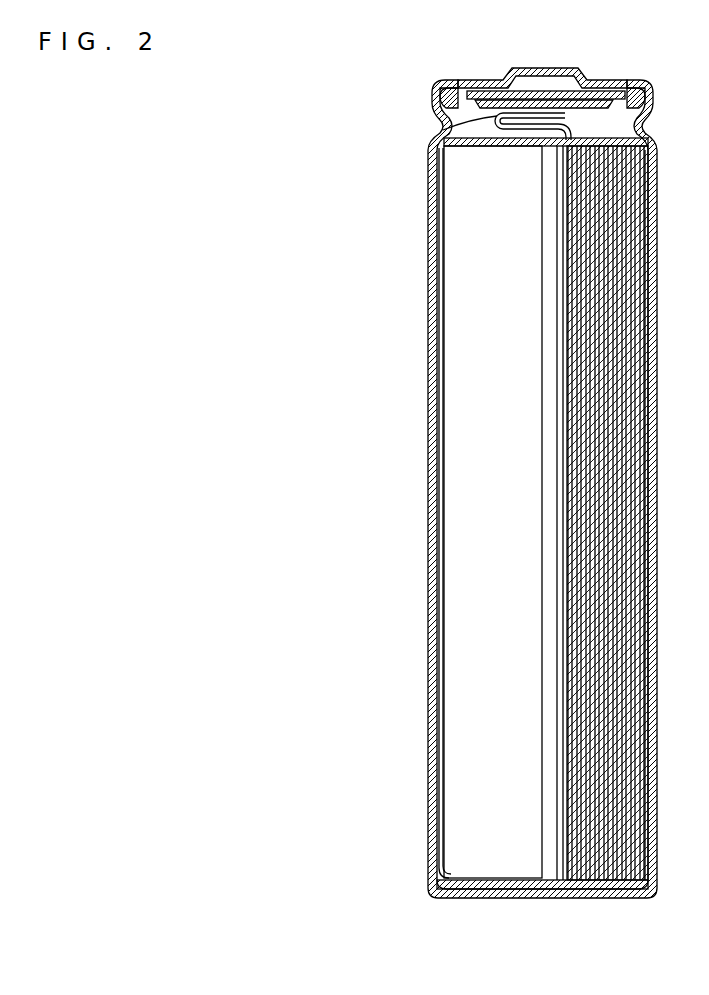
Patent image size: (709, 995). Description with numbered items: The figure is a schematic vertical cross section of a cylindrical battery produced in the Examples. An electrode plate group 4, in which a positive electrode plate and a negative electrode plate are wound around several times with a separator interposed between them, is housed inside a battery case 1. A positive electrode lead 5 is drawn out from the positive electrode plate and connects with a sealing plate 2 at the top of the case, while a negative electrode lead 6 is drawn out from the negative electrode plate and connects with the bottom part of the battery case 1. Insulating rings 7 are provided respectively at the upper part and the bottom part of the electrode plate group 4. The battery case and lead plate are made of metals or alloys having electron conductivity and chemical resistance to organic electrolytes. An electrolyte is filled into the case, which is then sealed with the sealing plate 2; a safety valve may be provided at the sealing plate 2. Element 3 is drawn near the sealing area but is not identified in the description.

The battery case 1 is at (652, 676).
The sealing plate 2 is at (562, 67).
The sealing plate 3 is at (648, 85).
The electrode plate group 4 is at (655, 459).
The positive electrode lead 5 is at (438, 128).
The negative electrode lead 6 is at (645, 860).
The insulating rings 7 is at (652, 127).